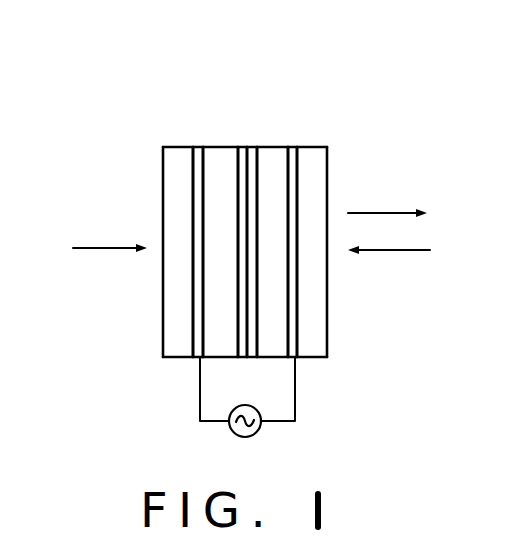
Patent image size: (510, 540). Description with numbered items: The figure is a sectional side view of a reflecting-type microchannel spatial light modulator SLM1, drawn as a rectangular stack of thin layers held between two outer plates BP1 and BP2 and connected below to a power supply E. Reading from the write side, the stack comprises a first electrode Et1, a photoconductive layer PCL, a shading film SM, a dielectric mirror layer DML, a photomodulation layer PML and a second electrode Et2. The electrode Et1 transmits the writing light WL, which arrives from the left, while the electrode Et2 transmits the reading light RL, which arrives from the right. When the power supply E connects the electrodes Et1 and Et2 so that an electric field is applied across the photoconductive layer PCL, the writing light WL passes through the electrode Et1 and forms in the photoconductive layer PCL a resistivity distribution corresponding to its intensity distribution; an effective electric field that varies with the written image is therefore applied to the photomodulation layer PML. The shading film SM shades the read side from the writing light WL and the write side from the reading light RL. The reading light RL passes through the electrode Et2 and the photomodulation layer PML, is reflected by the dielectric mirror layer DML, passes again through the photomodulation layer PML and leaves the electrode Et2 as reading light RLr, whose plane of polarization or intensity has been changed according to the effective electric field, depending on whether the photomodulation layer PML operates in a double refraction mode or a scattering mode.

The spatial light modulator SLM1 is at (351, 108).
The first base plate BP1 is at (163, 168).
The second base plate BP2 is at (328, 172).
The electrode Et1 is at (198, 147).
The electrode Et2 is at (292, 147).
The photoconductive layer PCL is at (218, 163).
The shading film SM is at (242, 147).
The dielectric mirror layer DML is at (254, 147).
The photomodulation layer PML is at (285, 147).
The power supply E is at (258, 433).
The writing light WL is at (85, 247).
The reading light RL is at (410, 249).
The reading light RLr is at (417, 211).